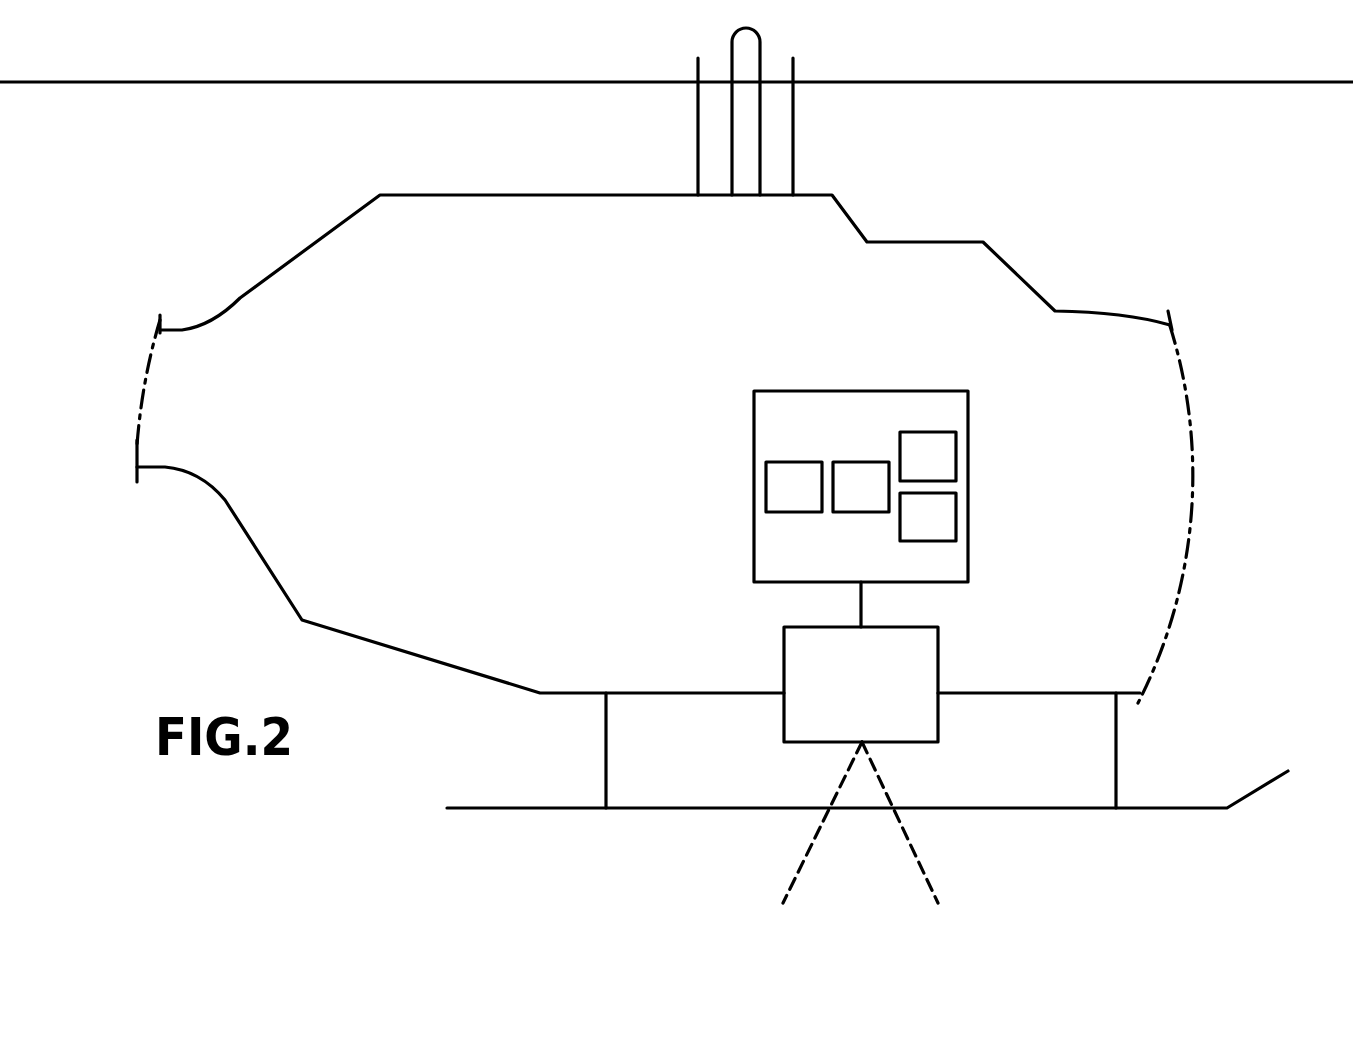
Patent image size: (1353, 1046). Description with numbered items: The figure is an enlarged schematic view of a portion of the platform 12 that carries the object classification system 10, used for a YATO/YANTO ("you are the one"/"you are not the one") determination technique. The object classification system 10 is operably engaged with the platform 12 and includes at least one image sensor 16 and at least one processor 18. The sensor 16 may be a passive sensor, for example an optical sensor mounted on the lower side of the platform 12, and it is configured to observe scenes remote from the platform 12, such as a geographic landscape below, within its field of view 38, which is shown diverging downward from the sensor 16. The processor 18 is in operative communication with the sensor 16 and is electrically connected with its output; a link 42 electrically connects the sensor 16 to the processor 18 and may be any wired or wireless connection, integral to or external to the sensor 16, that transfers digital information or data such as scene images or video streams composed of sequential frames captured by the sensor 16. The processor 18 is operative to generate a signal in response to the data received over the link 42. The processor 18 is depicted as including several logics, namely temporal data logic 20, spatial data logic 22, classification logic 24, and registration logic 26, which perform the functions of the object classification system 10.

The object classification system 10 is at (727, 456).
The platform 12 is at (292, 264).
The image sensor 16 is at (878, 696).
The processor 18 is at (969, 473).
The temporal data logic 20 is at (811, 500).
The spatial data logic 22 is at (878, 500).
The classification logic 24 is at (945, 469).
The registration logic 26 is at (945, 530).
The field of view 38 is at (810, 845).
The link 42 is at (863, 602).